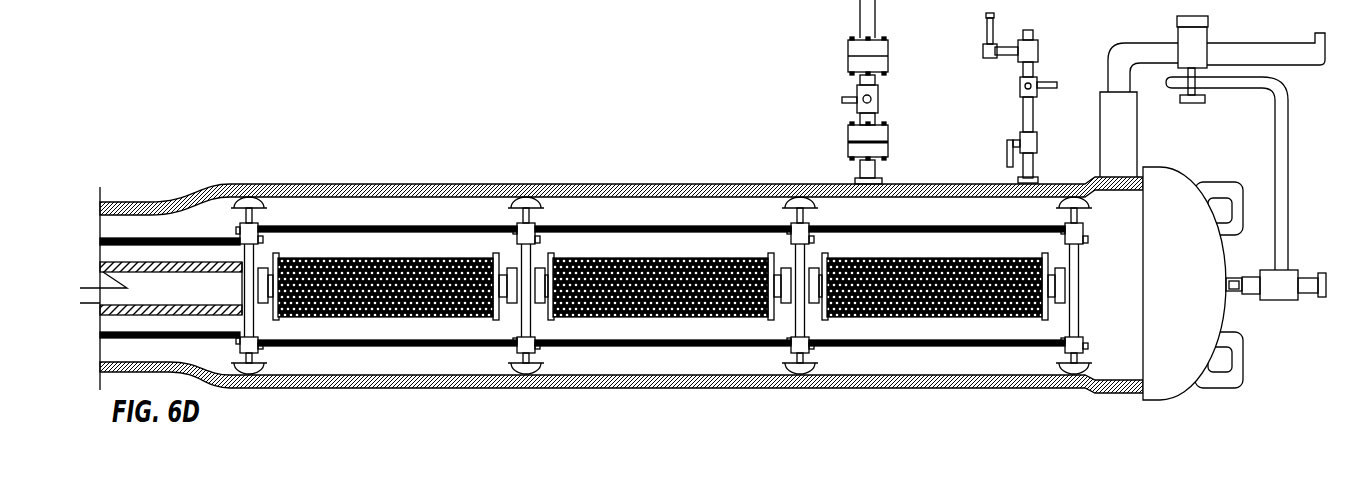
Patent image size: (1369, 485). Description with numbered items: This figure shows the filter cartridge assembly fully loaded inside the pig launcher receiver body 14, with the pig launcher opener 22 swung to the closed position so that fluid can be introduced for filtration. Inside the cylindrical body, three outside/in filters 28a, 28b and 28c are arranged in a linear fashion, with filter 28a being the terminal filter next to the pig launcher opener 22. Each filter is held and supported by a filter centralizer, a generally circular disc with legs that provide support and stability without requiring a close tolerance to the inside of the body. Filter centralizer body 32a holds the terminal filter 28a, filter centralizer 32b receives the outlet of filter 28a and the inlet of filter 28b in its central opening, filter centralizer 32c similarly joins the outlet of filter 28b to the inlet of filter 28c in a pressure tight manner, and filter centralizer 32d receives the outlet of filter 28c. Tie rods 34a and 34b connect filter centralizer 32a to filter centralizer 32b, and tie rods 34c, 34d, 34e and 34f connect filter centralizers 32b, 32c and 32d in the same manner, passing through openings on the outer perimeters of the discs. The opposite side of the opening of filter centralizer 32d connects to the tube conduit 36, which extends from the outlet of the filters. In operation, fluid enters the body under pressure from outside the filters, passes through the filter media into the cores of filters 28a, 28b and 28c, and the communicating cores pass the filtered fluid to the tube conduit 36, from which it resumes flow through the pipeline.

The pig launcher receiver body 14 is at (592, 184).
The pig launcher opener 22 is at (1173, 194).
The filter 28a is at (898, 253).
The filter 28b is at (660, 253).
The filter 28c is at (332, 253).
The filter centralizer body 32a is at (1072, 196).
The filter centralizer 32b is at (800, 196).
The filter centralizer 32c is at (525, 196).
The filter centralizer 32d is at (249, 196).
The tie rod 34a is at (963, 226).
The tie rod 34b is at (875, 347).
The tie rod 34c is at (730, 226).
The tie rod 34d is at (652, 347).
The tie rod 34e is at (430, 225).
The tie rod 34f is at (362, 347).
The tube conduit 36 is at (202, 316).